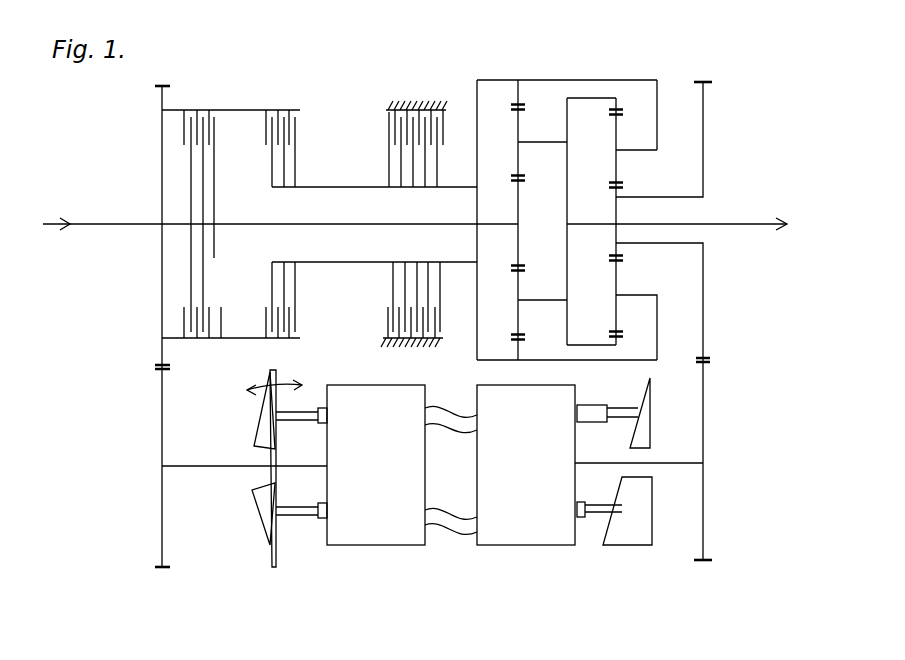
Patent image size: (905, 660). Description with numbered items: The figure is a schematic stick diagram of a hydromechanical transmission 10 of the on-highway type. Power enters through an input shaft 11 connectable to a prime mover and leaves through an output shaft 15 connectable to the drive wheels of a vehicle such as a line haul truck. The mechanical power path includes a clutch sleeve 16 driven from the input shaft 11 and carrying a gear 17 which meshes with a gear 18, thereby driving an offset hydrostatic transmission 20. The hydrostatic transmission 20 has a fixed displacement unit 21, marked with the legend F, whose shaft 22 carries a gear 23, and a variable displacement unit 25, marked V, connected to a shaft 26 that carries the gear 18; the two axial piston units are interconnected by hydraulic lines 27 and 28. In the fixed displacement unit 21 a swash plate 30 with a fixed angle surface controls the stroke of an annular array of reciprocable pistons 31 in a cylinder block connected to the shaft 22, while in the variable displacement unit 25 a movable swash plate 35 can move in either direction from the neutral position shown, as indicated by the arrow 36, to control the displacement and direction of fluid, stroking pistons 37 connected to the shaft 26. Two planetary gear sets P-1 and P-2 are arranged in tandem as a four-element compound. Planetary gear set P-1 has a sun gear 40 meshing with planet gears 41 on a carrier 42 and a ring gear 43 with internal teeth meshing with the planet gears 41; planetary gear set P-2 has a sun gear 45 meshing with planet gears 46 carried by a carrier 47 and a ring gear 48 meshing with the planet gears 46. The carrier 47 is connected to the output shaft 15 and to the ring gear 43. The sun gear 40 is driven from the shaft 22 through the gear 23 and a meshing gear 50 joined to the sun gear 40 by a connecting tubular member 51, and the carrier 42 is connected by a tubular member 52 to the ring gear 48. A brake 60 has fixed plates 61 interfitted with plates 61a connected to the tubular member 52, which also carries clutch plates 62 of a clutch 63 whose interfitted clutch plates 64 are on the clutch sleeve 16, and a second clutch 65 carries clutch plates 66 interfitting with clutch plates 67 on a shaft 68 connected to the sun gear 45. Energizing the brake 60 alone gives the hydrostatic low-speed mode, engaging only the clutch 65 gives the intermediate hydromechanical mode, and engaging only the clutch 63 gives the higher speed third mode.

The hydromechanical transmission 10 is at (480, 56).
The input shaft 11 is at (105, 227).
The output shaft 15 is at (735, 217).
The clutch sleeve 16 is at (235, 108).
The gear 17 is at (160, 307).
The gear 18 is at (160, 502).
The hydrostatic transmission 20 is at (438, 562).
The fixed displacement unit 21 is at (523, 546).
The shaft 22 is at (675, 465).
The gear 23 is at (703, 435).
The variable displacement unit 25 is at (375, 546).
The shaft 26 is at (208, 468).
The hydraulic line 27 is at (450, 513).
The hydraulic line 28 is at (450, 410).
The swash plate 30 is at (620, 533).
The pistons 31 is at (588, 407).
The movable swash plate 35 is at (268, 545).
The arrow 36 is at (283, 383).
The pistons 37 is at (322, 520).
The sun gear 40 is at (618, 249).
The planet gears 41 is at (614, 285).
The carrier 42 is at (658, 323).
The ring gear 43 is at (617, 342).
The sun gear 45 is at (516, 205).
The planet gears 46 is at (520, 291).
The carrier 47 is at (567, 245).
The ring gear 48 is at (520, 347).
The gear 50 is at (703, 305).
The connecting tubular member 51 is at (688, 236).
The tubular member 52 is at (575, 77).
The brake 60 is at (392, 104).
The fixed plates 61 is at (441, 327).
The plates 61a is at (392, 158).
The clutch plates 62 is at (295, 160).
The clutch 63 is at (309, 106).
The clutch plates 64 is at (300, 129).
The second clutch 65 is at (192, 95).
The clutch plates 66 is at (221, 130).
The clutch plates 67 is at (214, 258).
The shaft 68 is at (404, 220).
The planetary gear set P-1 is at (631, 97).
The planetary gear set P-2 is at (536, 66).